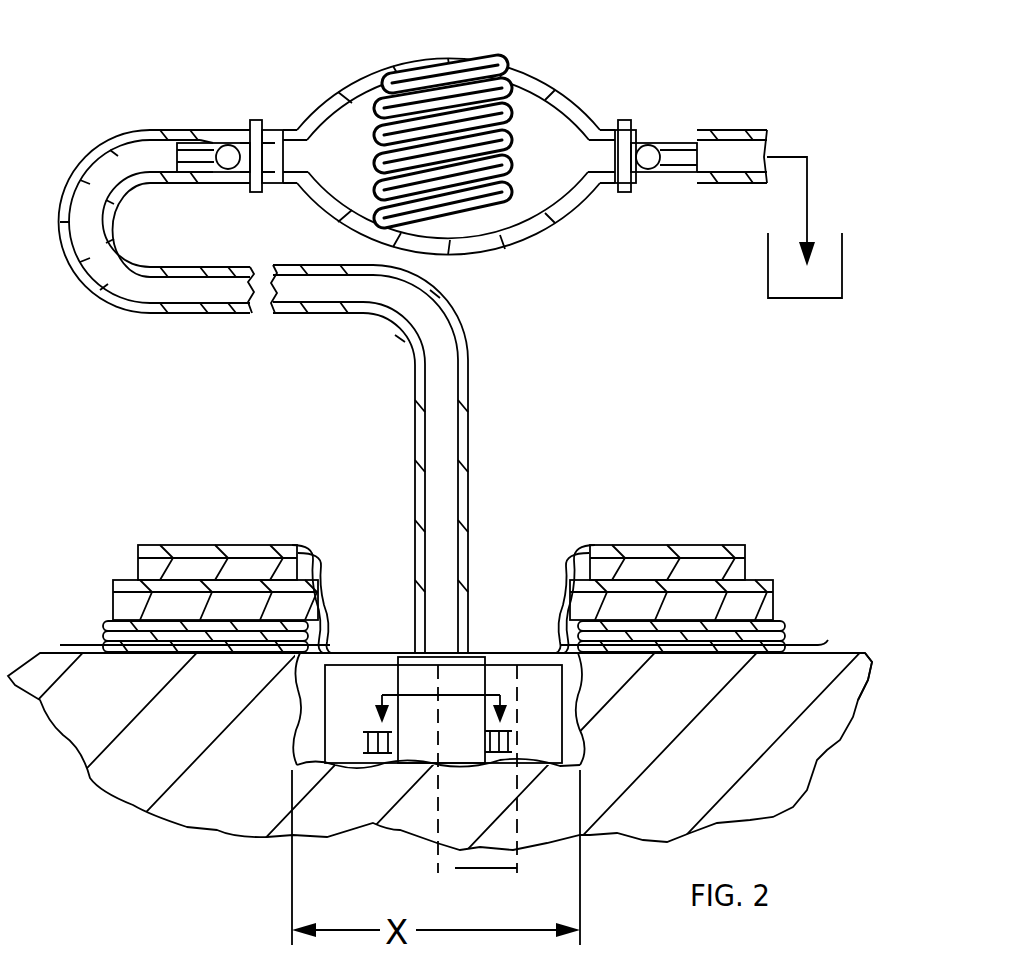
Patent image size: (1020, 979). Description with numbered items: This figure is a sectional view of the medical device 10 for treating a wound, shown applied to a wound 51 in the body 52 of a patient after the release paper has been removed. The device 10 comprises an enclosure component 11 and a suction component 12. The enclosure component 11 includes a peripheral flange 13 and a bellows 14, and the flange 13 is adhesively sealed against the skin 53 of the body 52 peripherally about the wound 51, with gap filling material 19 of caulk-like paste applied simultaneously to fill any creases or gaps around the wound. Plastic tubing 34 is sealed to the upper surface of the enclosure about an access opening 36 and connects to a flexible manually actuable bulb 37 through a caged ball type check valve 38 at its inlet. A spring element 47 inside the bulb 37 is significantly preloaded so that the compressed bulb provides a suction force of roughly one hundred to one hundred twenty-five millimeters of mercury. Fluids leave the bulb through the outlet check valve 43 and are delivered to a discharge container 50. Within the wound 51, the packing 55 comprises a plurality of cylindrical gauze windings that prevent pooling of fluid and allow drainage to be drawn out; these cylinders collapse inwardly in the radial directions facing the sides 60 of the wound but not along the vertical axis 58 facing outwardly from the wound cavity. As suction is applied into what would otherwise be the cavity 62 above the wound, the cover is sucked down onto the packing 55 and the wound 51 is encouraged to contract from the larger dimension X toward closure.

The suction component 12 is at (150, 124).
The caged ball type check valve 38 is at (231, 143).
The flexible manually actuable bulb 37 is at (430, 57).
The spring element 47 is at (505, 134).
The outlet check valve 43 is at (636, 140).
The discharge container 50 is at (764, 266).
The plastic tubing 34 is at (468, 382).
The access opening 36 is at (445, 648).
The medical device 10 is at (256, 532).
The enclosure component 11 is at (598, 532).
The bellows 14 is at (103, 640).
The peripheral flange 13 is at (812, 643).
The gap filling material 19 is at (755, 657).
The body 52 is at (832, 665).
The skin 53 is at (866, 702).
The wound 51 is at (585, 706).
The packing 55 is at (405, 664).
The axis 58 is at (438, 860).
The sides of the wound 60 is at (327, 643).
The cavity 62 is at (295, 667).